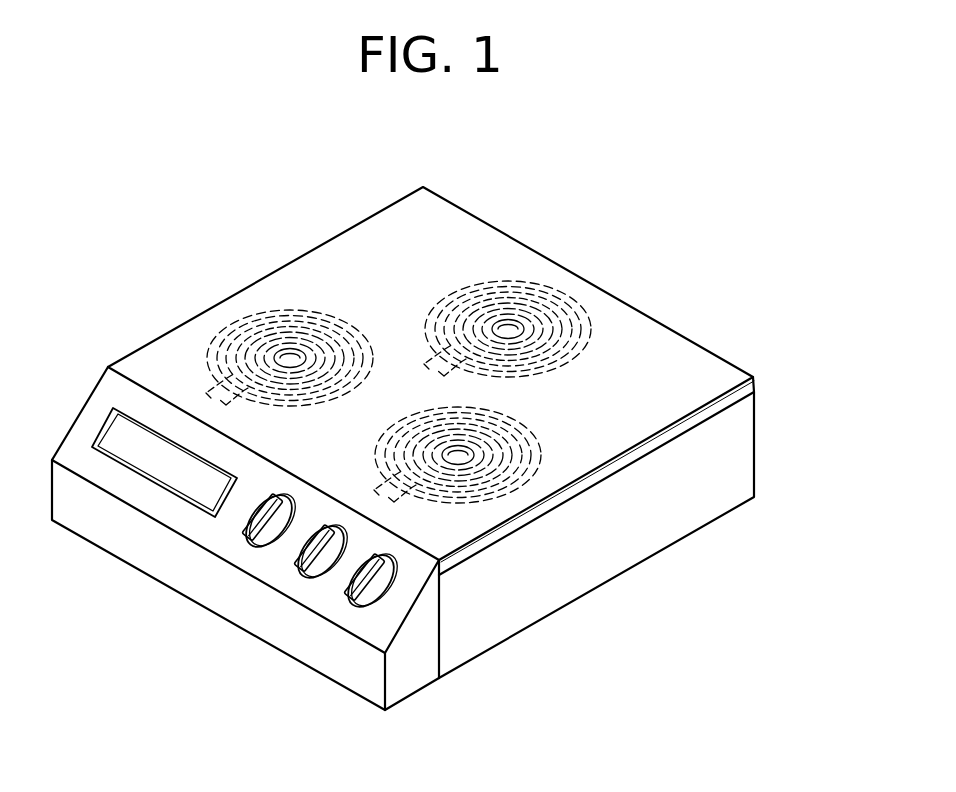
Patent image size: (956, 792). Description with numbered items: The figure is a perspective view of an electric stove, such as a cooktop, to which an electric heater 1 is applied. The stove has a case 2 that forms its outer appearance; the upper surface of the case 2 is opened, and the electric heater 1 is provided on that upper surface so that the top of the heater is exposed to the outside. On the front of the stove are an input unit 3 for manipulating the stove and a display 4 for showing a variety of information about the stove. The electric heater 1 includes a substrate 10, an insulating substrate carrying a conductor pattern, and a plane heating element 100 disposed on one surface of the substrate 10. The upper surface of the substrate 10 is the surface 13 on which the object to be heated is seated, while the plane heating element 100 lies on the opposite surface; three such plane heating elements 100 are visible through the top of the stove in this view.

The electric heater 1 is at (256, 230).
The case 2 is at (742, 455).
The input unit 3 is at (254, 546).
The display 4 is at (173, 470).
The substrate 10 is at (546, 255).
The surface on which the object to be heated is seated 13 is at (495, 250).
The plane heating element 100 is at (584, 291).